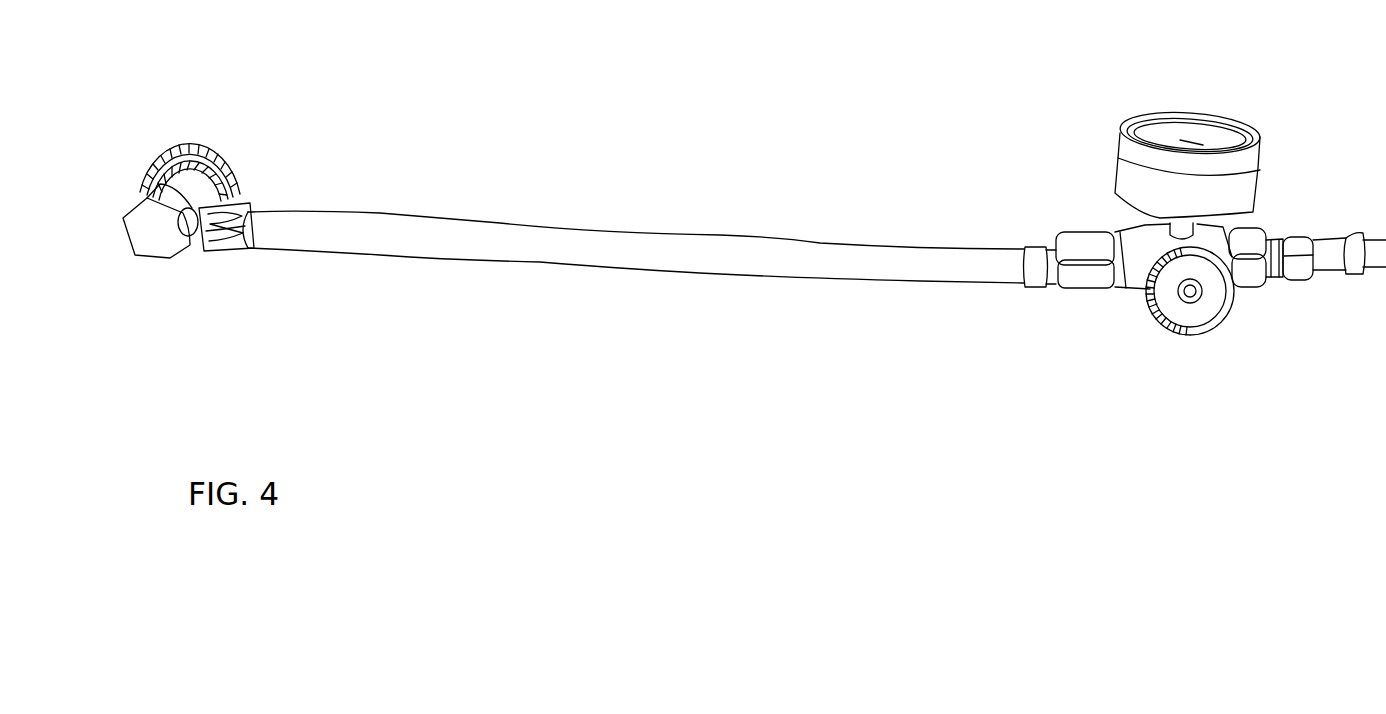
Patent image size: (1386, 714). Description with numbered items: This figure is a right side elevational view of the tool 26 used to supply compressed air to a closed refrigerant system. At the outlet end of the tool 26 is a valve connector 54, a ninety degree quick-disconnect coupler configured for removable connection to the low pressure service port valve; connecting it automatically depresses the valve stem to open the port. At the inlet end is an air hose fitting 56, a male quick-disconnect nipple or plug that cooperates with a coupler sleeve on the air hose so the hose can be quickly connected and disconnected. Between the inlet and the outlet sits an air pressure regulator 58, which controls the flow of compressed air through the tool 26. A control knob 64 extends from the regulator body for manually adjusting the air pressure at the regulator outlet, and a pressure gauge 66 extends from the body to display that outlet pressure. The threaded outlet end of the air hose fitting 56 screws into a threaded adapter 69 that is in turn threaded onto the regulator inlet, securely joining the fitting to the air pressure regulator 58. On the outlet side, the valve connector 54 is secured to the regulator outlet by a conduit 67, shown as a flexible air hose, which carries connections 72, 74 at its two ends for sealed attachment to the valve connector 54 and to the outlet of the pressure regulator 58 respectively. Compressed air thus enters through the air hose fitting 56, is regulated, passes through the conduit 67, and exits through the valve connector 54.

The tool 26 is at (730, 160).
The valve connector 54 is at (160, 237).
The air hose fitting 56 is at (1323, 272).
The air pressure regulator 58 is at (1230, 108).
The control knob 64 is at (1162, 325).
The pressure gauge 66 is at (1162, 133).
The conduit 67 is at (438, 255).
The threaded adapter 69 is at (1253, 287).
The connection 72 is at (248, 207).
The connection 74 is at (1077, 287).